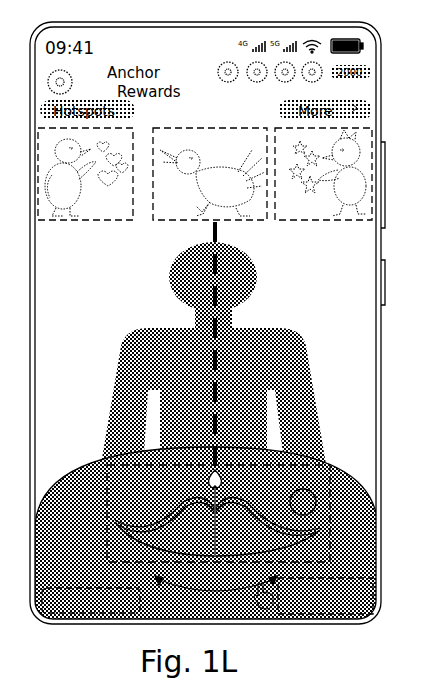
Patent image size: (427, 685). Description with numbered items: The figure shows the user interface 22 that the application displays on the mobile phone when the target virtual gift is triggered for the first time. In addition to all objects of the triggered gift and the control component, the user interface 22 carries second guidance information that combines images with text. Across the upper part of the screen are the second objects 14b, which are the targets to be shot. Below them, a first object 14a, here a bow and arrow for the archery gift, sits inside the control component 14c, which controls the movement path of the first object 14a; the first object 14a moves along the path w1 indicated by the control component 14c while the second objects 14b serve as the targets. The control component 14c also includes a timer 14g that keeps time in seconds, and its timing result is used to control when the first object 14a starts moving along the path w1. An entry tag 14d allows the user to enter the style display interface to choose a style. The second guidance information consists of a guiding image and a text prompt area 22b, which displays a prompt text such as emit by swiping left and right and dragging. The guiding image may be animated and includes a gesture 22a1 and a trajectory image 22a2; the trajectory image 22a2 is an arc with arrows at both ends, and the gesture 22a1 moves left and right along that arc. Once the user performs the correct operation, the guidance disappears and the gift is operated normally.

The user interface 22 is at (213, 38).
The second object 14b is at (92, 220).
The path w1 is at (216, 318).
The control component 14c is at (337, 463).
The first object 14a is at (108, 485).
The timer 14g is at (318, 502).
The entry tag 14d is at (54, 592).
The text prompt area 22b is at (335, 579).
The gesture 22a1 is at (201, 591).
The trajectory image 22a2 is at (254, 598).